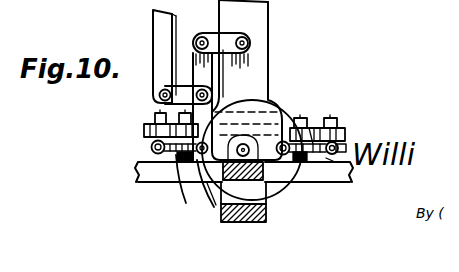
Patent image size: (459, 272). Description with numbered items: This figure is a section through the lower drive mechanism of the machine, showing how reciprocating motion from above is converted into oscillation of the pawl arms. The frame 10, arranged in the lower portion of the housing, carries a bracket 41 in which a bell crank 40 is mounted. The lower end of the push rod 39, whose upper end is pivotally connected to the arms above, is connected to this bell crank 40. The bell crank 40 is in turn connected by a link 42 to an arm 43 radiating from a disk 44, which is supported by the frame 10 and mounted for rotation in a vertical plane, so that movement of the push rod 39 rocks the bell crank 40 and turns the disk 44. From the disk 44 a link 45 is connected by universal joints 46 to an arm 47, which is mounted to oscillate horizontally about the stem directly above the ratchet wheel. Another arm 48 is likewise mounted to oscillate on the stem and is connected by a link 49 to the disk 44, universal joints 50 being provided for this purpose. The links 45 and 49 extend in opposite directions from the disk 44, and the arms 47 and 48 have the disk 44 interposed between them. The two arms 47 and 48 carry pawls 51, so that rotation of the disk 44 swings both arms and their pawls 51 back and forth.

The frame 10 is at (160, 172).
The push rod 39 is at (163, 30).
The bell crank 40 is at (197, 67).
The bracket 41 is at (160, 108).
The link 42 is at (233, 40).
The arm 43 is at (243, 73).
The disk 44 is at (266, 212).
The link 45 is at (326, 162).
The universal joints 46 is at (400, 139).
The arm 47 is at (348, 139).
The arm 48 is at (143, 128).
The link 49 is at (171, 180).
The universal joints 50 is at (151, 147).
The pawls 51 is at (310, 127).